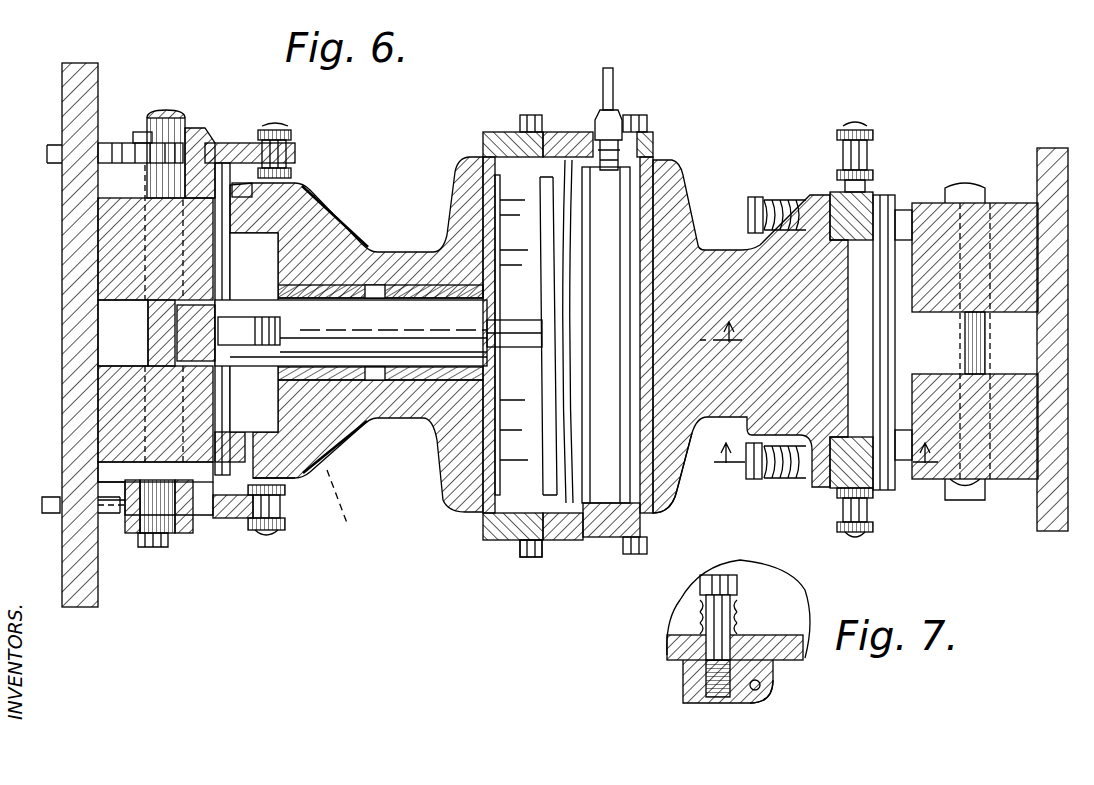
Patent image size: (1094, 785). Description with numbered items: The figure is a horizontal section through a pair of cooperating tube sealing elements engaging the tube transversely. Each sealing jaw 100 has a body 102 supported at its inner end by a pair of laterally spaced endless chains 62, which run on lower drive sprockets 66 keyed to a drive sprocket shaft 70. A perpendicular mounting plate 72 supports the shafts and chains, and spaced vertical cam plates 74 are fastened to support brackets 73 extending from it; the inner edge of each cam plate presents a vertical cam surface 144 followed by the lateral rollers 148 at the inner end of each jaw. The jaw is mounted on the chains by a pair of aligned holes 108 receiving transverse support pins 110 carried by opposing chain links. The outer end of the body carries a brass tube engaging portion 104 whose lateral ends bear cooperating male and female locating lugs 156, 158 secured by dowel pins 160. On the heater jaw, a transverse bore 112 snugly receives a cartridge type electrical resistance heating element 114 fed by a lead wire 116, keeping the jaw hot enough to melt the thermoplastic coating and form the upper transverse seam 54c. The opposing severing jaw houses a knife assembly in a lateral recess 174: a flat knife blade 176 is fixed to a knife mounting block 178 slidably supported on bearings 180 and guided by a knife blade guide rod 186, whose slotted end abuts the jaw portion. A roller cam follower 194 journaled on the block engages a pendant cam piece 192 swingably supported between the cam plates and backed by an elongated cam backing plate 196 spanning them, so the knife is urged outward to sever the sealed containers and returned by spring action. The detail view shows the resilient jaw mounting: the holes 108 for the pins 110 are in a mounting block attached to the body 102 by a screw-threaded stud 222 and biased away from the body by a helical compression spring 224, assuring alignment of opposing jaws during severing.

In FIG. 6, the mounting plate 72 is at (68, 102).
In FIG. 6, the support bracket 73 is at (103, 185).
In FIG. 6, the cam plate 74 is at (203, 205).
In FIG. 6, the lower drive sprocket 66 is at (235, 160).
In FIG. 6, the endless chain 62 is at (283, 128).
In FIG. 6, the front lateral roller 148 is at (945, 118).
In FIG. 6, the vertical cam surface 144 is at (935, 160).
In FIG. 6, the bearing 180 is at (408, 292).
In FIG. 6, the lateral recess 174 is at (368, 439).
In FIG. 6, the knife mounting block 178 is at (450, 332).
In FIG. 6, the cam follower 194 is at (283, 330).
In FIG. 6, the cam backing plate 196 is at (148, 336).
In FIG. 6, the pendant cam piece 192 is at (185, 348).
In FIG. 6, the knife blade guide rod 186 is at (515, 332).
In FIG. 6, the tube engaging portion 104 is at (497, 540).
In FIG. 7, the tube engaging portion 104 is at (638, 591).
In FIG. 6, the male locating lug 156 is at (565, 540).
In FIG. 6, the female locating lug 158 is at (540, 540).
In FIG. 6, the dowel pin 160 is at (522, 557).
In FIG. 6, the knife blade 176 is at (528, 336).
In FIG. 6, the upper transverse seam 54c is at (572, 272).
In FIG. 6, the cartridge type electrical resistance heating element 114 is at (622, 433).
In FIG. 6, the transverse bore 112 is at (640, 435).
In FIG. 6, the electrical lead wire 116 is at (613, 85).
In FIG. 6, the sealing jaw 100 is at (745, 160).
In FIG. 6, the jaw body 102 is at (685, 508).
In FIG. 7, the jaw body 102 is at (680, 660).
In FIG. 6, the stud 222 is at (755, 197).
In FIG. 7, the stud 222 is at (740, 588).
In FIG. 7, the helical compression spring 224 is at (700, 612).
In FIG. 6, the hole 108 is at (360, 500).
In FIG. 7, the hole 108 is at (775, 675).
In FIG. 6, the support pin 110 is at (287, 483).
In FIG. 7, the support pin 110 is at (755, 690).
In FIG. 6, the drive sprocket shaft 70 is at (170, 548).